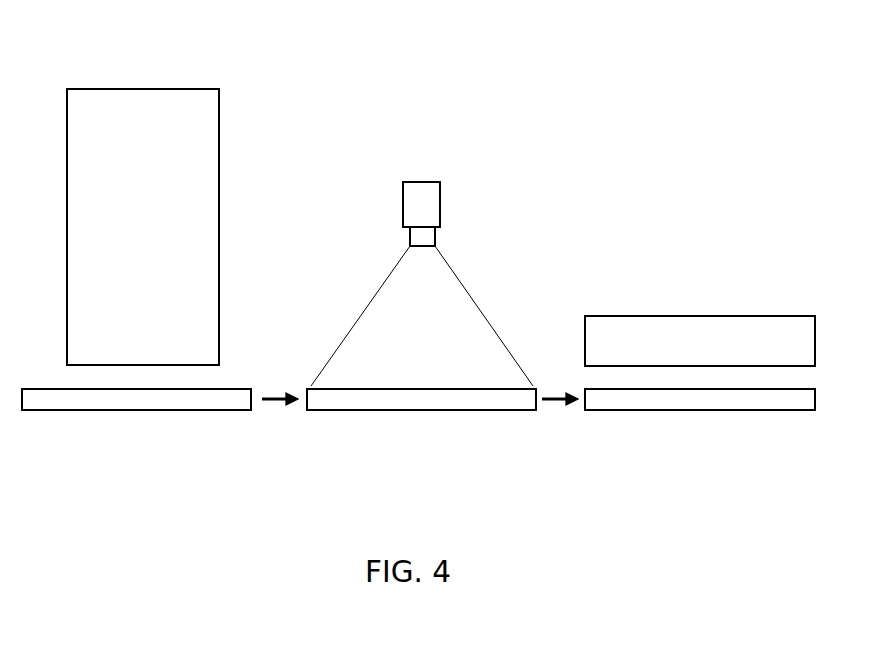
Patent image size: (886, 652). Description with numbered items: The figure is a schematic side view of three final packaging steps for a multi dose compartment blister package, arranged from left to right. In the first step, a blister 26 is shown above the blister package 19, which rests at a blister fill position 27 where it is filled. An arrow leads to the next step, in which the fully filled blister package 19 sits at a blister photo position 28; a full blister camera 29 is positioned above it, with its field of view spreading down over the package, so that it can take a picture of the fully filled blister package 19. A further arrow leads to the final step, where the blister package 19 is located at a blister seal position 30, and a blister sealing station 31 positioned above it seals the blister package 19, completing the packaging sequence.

The blister package 19 is at (67, 402).
The blister 26 is at (137, 113).
The blister fill position 27 is at (126, 478).
The blister photo position 28 is at (406, 478).
The full blister camera 29 is at (422, 193).
The blister seal position 30 is at (687, 478).
The blister sealing station 31 is at (698, 333).